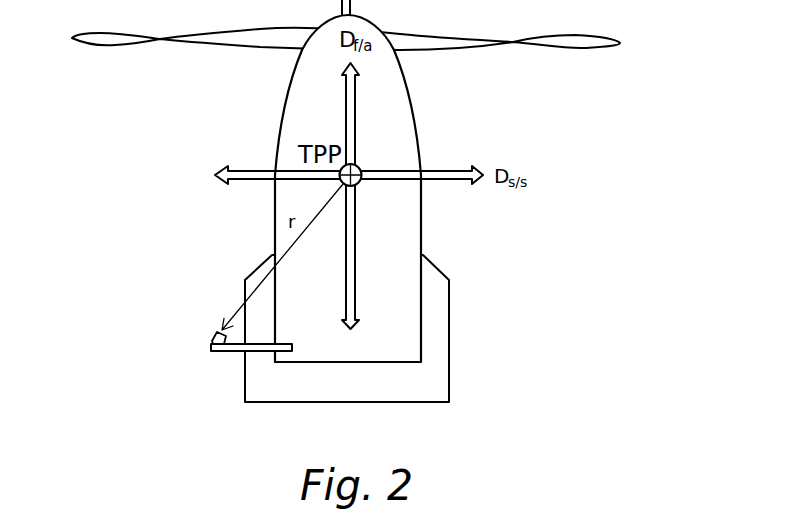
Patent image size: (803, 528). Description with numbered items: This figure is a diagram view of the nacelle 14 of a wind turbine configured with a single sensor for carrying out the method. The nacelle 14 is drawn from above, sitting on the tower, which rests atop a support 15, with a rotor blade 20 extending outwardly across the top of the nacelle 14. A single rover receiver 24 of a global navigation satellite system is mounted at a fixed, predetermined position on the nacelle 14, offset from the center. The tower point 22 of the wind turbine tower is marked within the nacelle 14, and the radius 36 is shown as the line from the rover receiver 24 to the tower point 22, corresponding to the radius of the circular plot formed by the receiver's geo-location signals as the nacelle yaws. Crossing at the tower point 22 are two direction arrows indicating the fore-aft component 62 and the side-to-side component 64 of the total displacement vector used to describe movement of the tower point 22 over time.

The nacelle 14 is at (413, 113).
The support 15 is at (397, 401).
The rotor blade 20 is at (518, 40).
The TPP 22 is at (361, 167).
The rover receiver 24 is at (212, 348).
The radius 36 is at (284, 247).
The fore-aft component 62 is at (346, 117).
The side-to-side component 64 is at (239, 170).